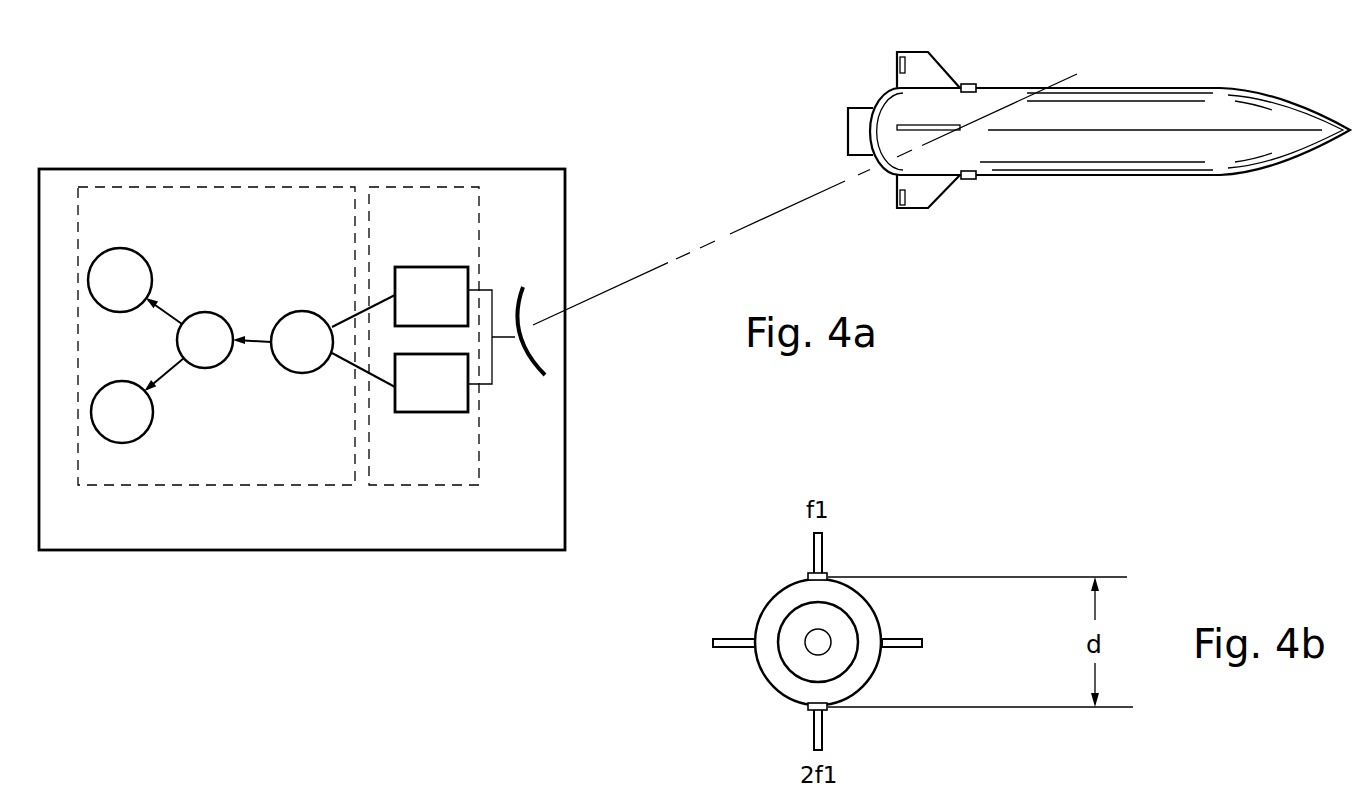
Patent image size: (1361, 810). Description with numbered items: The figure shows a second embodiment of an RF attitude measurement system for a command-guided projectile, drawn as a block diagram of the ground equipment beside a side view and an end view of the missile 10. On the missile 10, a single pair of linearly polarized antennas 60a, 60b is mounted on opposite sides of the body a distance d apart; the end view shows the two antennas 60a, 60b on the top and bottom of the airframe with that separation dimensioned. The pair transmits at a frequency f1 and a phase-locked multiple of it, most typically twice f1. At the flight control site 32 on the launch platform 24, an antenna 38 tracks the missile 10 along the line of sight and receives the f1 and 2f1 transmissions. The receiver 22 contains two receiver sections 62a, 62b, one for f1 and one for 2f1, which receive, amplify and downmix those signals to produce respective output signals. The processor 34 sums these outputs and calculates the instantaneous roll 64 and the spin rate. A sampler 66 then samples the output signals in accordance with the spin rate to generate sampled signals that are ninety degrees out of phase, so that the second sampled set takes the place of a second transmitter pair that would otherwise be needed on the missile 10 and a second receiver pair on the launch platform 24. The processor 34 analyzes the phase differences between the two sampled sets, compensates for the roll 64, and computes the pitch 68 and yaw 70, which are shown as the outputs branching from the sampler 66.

In FIG. 4a, the missile 10 is at (1185, 88).
In FIG. 4a, the receiver 22 is at (405, 186).
In FIG. 4a, the launch platform 24 is at (312, 536).
In FIG. 4a, the flight control site 32 is at (555, 133).
In FIG. 4a, the processor 34 is at (247, 186).
In FIG. 4a, the antenna 38 is at (528, 355).
In FIG. 4a, the linearly polarized antenna 60a is at (968, 84).
In FIG. 4b, the linearly polarized antenna 60a is at (828, 576).
In FIG. 4a, the linearly polarized antenna 60b is at (968, 179).
In FIG. 4b, the linearly polarized antenna 60b is at (807, 707).
In FIG. 4a, the receiver section 62a is at (435, 267).
In FIG. 4a, the receiver section 62b is at (435, 412).
In FIG. 4a, the roll 64 is at (284, 354).
In FIG. 4a, the sampler 66 is at (219, 354).
In FIG. 4a, the pitch 68 is at (160, 243).
In FIG. 4a, the yaw 70 is at (180, 448).